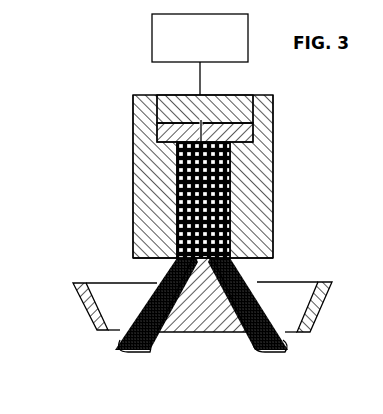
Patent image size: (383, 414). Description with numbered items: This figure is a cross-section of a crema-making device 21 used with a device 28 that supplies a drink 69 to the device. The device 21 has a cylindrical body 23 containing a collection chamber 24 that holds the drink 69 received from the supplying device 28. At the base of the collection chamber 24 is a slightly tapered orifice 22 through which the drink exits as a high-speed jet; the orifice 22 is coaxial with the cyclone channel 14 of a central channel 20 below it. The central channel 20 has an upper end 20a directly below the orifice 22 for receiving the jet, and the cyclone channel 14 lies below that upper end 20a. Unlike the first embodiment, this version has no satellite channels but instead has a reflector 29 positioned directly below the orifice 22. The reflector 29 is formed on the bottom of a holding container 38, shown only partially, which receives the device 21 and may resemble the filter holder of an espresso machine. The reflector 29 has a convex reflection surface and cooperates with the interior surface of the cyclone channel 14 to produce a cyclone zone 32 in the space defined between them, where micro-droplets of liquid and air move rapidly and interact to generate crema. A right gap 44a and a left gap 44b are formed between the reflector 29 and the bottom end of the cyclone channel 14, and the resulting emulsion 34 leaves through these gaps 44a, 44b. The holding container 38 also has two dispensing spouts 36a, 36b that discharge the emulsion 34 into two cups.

The device 21 is at (68, 197).
The device 28 is at (215, 55).
The drink 69 is at (172, 105).
The collection chamber 24 is at (243, 112).
The orifice 22 is at (157, 126).
The cylindrical body 23 is at (133, 163).
The cyclone channel 14 is at (232, 186).
The upper end 20a is at (236, 146).
The cyclone zone 32 is at (238, 204).
The central channel 20 is at (240, 228).
The reflector 29 is at (180, 224).
The holding container 38 is at (58, 291).
The right gap 44a is at (258, 264).
The left gap 44b is at (183, 268).
The emulsion 34 is at (134, 313).
The dispensing spout 36a is at (302, 319).
The dispensing spout 36b is at (98, 315).